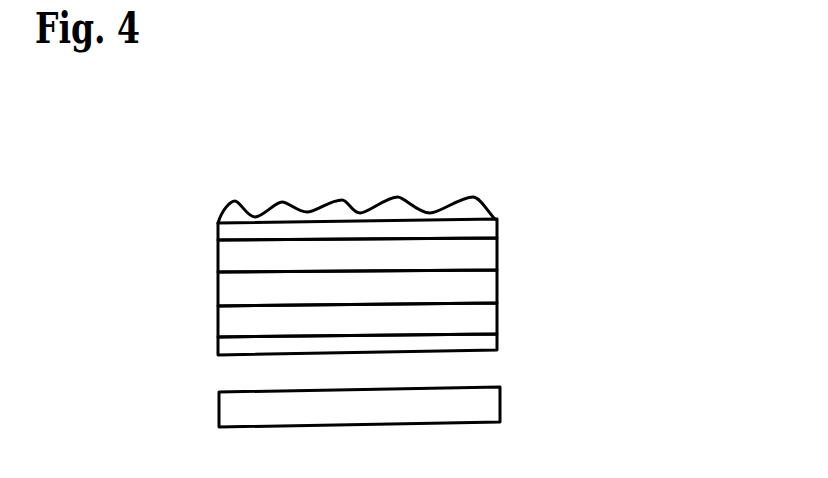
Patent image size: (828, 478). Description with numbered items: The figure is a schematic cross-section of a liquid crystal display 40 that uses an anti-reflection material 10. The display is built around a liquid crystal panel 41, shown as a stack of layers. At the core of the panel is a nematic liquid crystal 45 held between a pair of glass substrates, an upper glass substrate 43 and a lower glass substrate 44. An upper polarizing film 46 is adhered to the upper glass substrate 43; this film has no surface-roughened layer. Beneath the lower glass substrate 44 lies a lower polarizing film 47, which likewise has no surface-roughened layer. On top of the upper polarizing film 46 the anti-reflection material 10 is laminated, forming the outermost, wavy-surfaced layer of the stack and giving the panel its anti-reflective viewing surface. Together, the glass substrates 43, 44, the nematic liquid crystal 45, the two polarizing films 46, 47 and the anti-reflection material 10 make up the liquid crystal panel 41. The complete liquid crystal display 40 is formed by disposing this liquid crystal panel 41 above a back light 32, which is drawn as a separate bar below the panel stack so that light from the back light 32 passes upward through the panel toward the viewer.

The anti-reflection material 10 is at (407, 270).
The upper polarizing film 46 is at (497, 220).
The glass substrate 43 is at (490, 247).
The nematic liquid crystal 45 is at (490, 285).
The glass substrate 44 is at (493, 318).
The lower polarizing film 47 is at (493, 343).
The liquid crystal panel 41 is at (450, 272).
The liquid crystal display 40 is at (483, 299).
The back light 32 is at (405, 411).